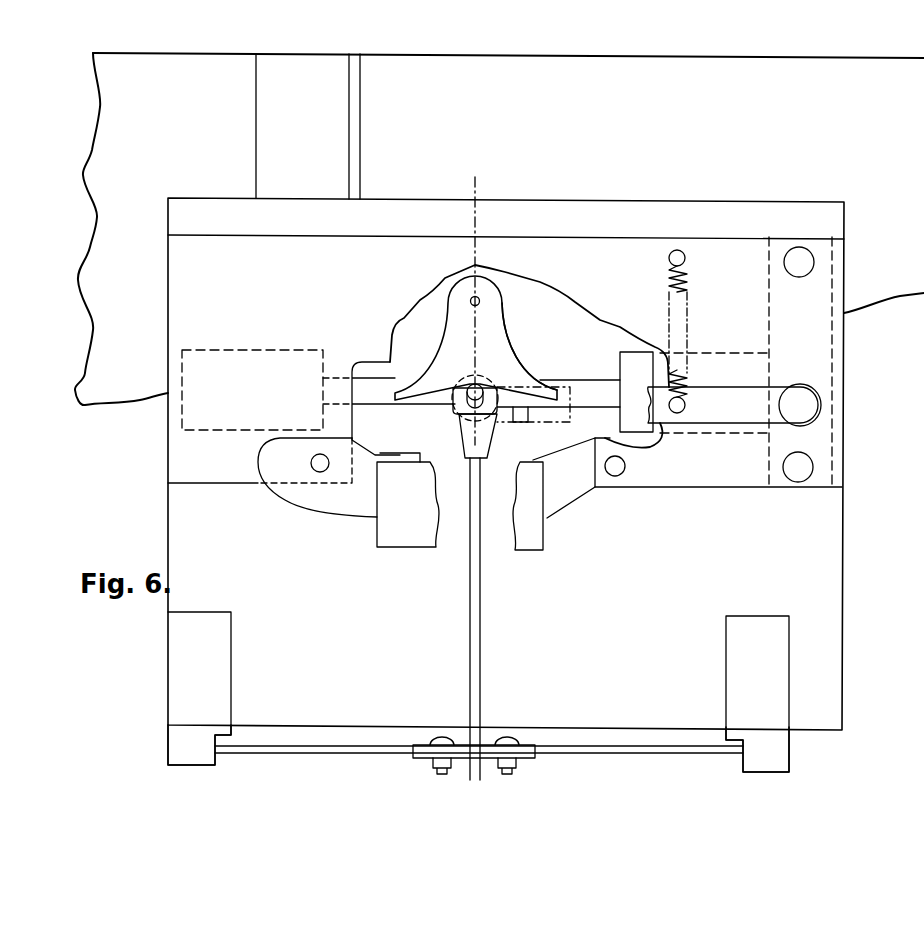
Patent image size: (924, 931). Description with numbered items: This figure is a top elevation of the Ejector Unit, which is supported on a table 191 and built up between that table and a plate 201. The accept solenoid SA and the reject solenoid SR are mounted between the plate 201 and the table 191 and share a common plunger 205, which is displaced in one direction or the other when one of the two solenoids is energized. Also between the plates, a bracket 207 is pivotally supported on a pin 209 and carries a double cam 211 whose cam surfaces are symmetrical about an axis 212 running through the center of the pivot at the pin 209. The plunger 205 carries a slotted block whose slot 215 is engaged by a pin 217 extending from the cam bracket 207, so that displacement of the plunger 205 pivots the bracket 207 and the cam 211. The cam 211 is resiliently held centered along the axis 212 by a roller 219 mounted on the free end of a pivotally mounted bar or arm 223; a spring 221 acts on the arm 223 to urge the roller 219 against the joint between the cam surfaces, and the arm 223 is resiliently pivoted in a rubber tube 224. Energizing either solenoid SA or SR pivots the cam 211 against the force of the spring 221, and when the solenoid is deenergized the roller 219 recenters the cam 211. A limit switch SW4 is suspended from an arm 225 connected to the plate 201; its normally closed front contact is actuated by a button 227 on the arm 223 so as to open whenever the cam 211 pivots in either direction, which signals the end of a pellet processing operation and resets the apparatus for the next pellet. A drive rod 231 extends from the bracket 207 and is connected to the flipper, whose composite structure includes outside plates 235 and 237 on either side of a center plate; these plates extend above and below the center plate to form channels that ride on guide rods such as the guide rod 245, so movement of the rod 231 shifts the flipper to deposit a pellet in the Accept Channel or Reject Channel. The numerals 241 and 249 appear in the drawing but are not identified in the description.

The table 191 is at (565, 316).
The plate 201 is at (630, 255).
The common plunger 205 is at (375, 385).
The bracket 207 is at (462, 440).
The pin 209 is at (481, 300).
The double cam 211 is at (522, 382).
The axis 212 is at (478, 327).
The slot 215 is at (466, 385).
The pin 217 is at (481, 384).
The roller 219 is at (452, 412).
The spring 221 is at (690, 282).
The bar or arm 223 is at (752, 398).
The rubber tube 224 is at (822, 397).
The arm 225 is at (347, 507).
The button 227 is at (522, 423).
The drive rod 231 is at (481, 628).
The plate 235 is at (488, 744).
The plate 237 is at (523, 762).
The clamp 241 is at (423, 752).
The guide rod 245 is at (645, 754).
The support block 249 is at (200, 752).
The reject solenoid SR is at (275, 358).
The accept solenoid SA is at (733, 362).
The limit switch SW4 is at (535, 537).